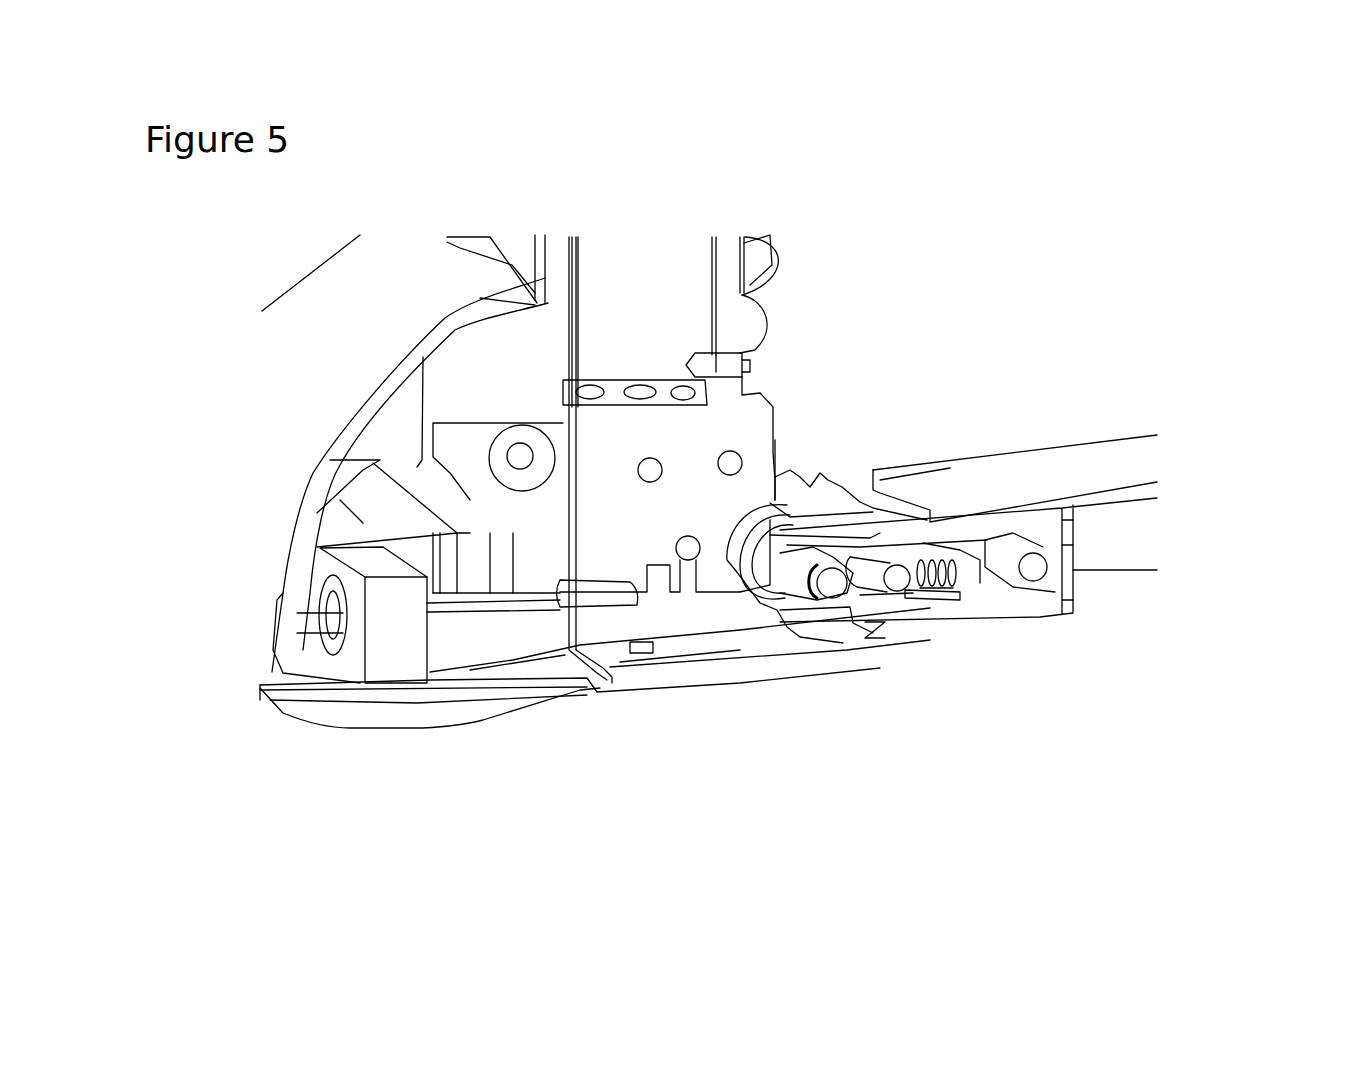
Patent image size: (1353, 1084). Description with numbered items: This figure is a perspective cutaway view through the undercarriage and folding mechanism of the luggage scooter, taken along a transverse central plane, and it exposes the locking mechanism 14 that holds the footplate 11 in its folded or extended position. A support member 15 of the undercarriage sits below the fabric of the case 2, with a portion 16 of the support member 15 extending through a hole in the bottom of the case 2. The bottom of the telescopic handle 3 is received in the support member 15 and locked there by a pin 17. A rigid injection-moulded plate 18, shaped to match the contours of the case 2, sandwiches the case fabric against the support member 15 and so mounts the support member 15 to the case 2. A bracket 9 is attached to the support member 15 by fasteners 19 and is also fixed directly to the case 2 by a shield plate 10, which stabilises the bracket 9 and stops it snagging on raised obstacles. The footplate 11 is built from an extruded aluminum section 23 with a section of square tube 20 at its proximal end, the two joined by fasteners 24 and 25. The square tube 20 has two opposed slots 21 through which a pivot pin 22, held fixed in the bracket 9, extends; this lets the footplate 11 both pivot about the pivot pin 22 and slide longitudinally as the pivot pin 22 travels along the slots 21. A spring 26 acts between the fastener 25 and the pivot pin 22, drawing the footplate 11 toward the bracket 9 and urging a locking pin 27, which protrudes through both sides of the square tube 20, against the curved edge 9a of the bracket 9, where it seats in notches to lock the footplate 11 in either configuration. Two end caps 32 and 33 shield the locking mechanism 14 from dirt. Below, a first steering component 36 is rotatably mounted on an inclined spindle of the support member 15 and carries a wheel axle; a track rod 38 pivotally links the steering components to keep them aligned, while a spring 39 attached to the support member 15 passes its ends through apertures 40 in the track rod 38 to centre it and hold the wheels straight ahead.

The case 2 is at (488, 300).
The telescopic handle 3 is at (650, 300).
The bracket 9 is at (687, 670).
The curved edge 9a is at (838, 470).
The shield plate 10 is at (593, 690).
The footplate 11 is at (1082, 433).
The locking mechanism 14 is at (882, 668).
The support member 15 is at (760, 435).
The portion of the support member 16 is at (725, 255).
The pin 17 is at (725, 355).
The plate 18 is at (430, 333).
The fasteners 19 is at (688, 548).
The section of square tube 20 is at (1053, 617).
The slots 21 is at (782, 583).
The pivot pin 22 is at (831, 592).
The extruded aluminum section 23 is at (1127, 515).
The fastener 24 is at (965, 565).
The fastener 25 is at (1035, 570).
The spring 26 is at (938, 587).
The locking pin 27 is at (905, 587).
The end cap 32 is at (1070, 547).
The end cap 33 is at (758, 592).
The first steering component 36 is at (363, 523).
The track rod 38 is at (393, 657).
The spring 39 is at (517, 610).
The aperture 40 is at (330, 633).